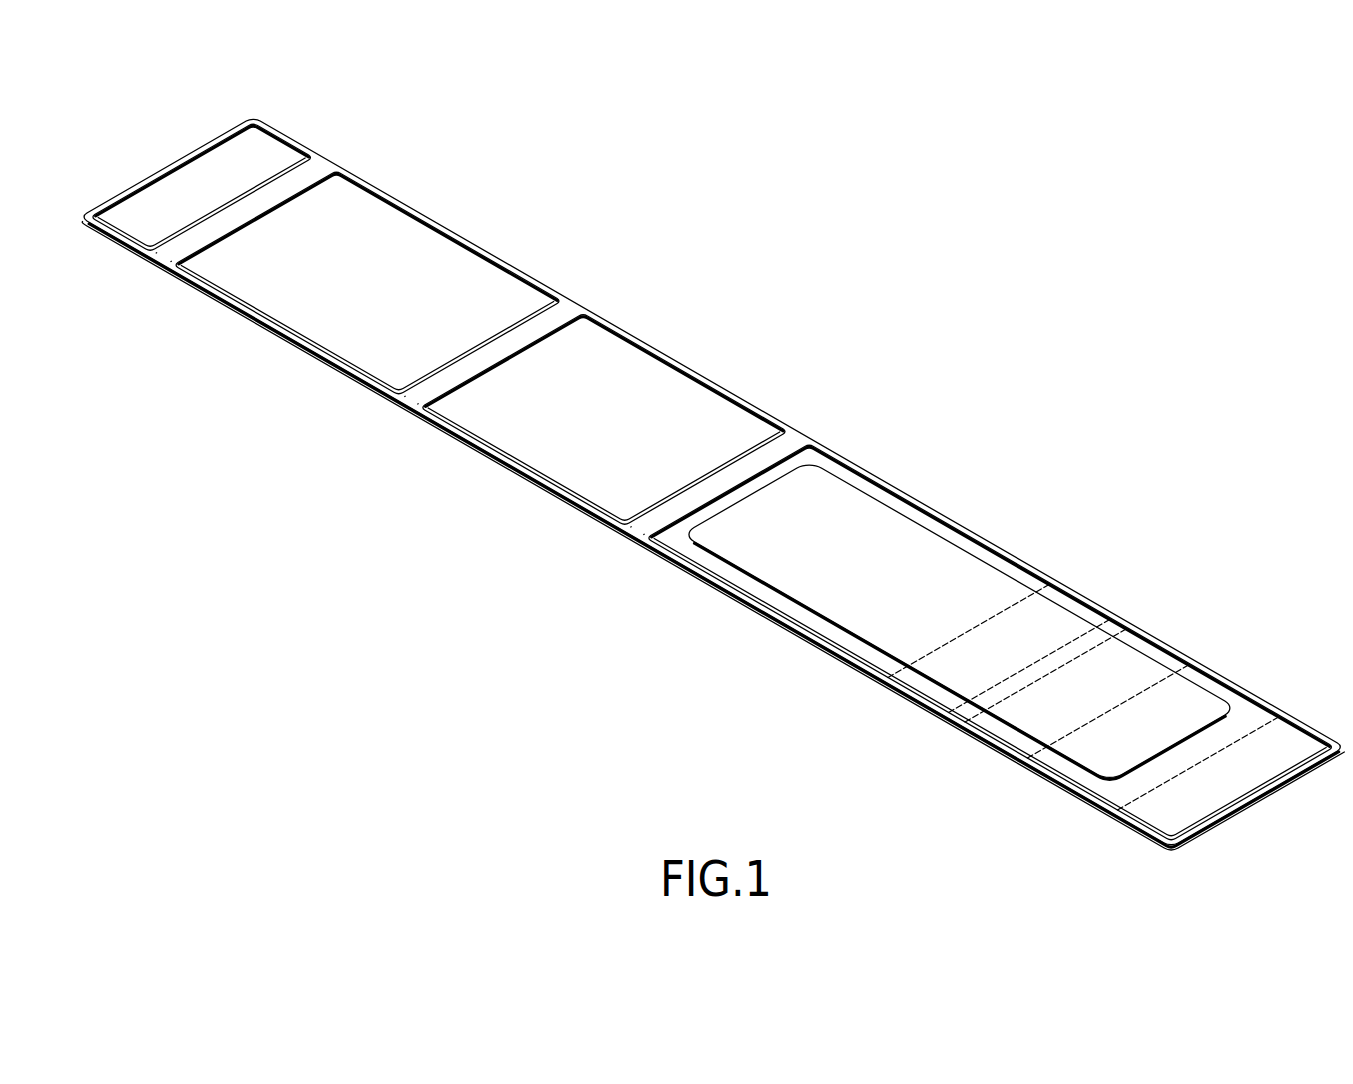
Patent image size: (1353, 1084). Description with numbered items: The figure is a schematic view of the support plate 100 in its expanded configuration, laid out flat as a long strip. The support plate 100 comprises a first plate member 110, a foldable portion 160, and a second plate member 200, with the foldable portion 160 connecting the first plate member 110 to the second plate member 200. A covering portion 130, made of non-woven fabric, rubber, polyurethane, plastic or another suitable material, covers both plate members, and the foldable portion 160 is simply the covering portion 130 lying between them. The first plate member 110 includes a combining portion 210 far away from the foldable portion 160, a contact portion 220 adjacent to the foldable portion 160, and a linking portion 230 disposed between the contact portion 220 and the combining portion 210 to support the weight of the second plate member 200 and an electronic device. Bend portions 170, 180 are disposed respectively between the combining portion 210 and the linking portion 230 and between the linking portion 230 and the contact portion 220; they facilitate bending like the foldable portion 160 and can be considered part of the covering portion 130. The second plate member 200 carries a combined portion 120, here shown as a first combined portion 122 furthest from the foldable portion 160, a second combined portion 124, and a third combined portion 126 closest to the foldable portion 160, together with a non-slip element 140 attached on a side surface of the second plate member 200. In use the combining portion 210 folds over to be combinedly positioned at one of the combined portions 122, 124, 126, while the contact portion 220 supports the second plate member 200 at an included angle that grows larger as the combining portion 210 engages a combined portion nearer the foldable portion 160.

The support plate 100 is at (699, 100).
The first plate member 110 is at (438, 316).
The combined portion 120 is at (1112, 650).
The first combined portion 122 is at (1222, 718).
The second combined portion 124 is at (1156, 648).
The third combined portion 126 is at (1068, 600).
The covering portion 130 is at (503, 463).
The non-slip element 140 is at (900, 519).
The foldable portion 160 is at (758, 458).
The bend portion 170 is at (167, 258).
The bend portion 180 is at (413, 402).
The second plate member 200 is at (991, 631).
The combining portion 210 is at (280, 143).
The contact portion 220 is at (603, 381).
The linking portion 230 is at (423, 229).